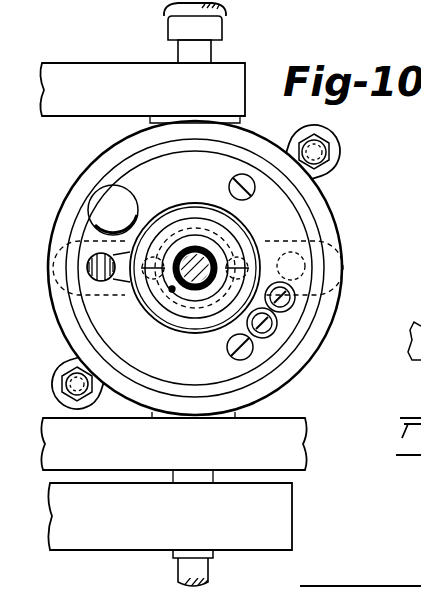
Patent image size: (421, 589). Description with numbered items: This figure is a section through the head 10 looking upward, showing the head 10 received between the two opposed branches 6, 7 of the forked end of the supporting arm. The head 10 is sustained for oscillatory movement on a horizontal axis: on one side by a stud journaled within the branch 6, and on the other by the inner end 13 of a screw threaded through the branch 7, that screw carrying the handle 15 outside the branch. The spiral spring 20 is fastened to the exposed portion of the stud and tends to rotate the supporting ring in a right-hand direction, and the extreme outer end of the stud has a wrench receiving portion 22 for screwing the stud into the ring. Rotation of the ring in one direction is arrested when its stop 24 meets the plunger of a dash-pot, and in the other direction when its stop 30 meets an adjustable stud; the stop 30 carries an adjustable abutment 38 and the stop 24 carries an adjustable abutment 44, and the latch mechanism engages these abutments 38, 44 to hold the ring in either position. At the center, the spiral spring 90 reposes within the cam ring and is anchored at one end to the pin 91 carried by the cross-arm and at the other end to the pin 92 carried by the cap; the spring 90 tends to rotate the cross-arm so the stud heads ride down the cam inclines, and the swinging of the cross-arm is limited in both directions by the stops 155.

The branch 7 is at (142, 93).
The handle 15 is at (222, 12).
The inner end of screw 13 is at (47, 166).
The head 10 is at (339, 252).
The spiral spring 90 is at (210, 251).
The pin 91 is at (172, 289).
The pin 92 is at (196, 290).
The stops 155 is at (277, 322).
The stop 30 is at (329, 149).
The adjustable abutment 38 is at (326, 156).
The stop 24 is at (62, 379).
The adjustable abutment 44 is at (60, 396).
The branch 6 is at (173, 444).
The spiral spring 20 is at (170, 510).
The wrench receiving portion 22 is at (196, 566).